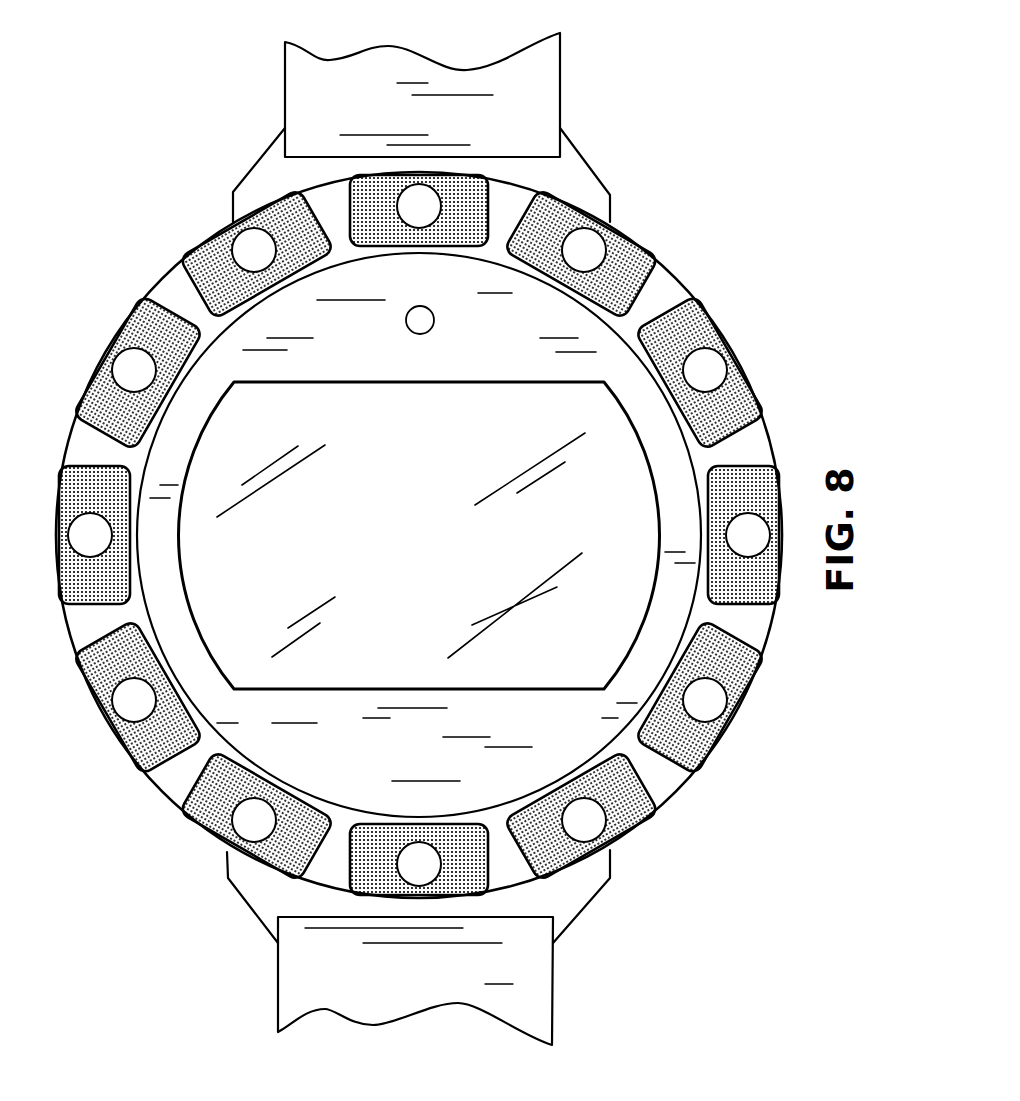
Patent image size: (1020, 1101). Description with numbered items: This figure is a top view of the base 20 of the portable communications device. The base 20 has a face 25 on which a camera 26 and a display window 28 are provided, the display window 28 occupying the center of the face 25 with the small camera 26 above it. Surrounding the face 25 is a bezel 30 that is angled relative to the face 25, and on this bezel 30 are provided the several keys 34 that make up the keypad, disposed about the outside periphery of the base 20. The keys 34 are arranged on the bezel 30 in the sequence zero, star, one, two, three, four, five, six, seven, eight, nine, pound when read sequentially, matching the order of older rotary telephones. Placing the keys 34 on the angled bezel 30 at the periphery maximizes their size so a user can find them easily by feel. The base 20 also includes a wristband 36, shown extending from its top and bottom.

The base 20 is at (782, 263).
The face 25 is at (253, 358).
The camera 26 is at (433, 308).
The display window 28 is at (247, 657).
The bezel 30 is at (760, 627).
The keys 34 is at (713, 755).
The wristband 36 is at (543, 75).